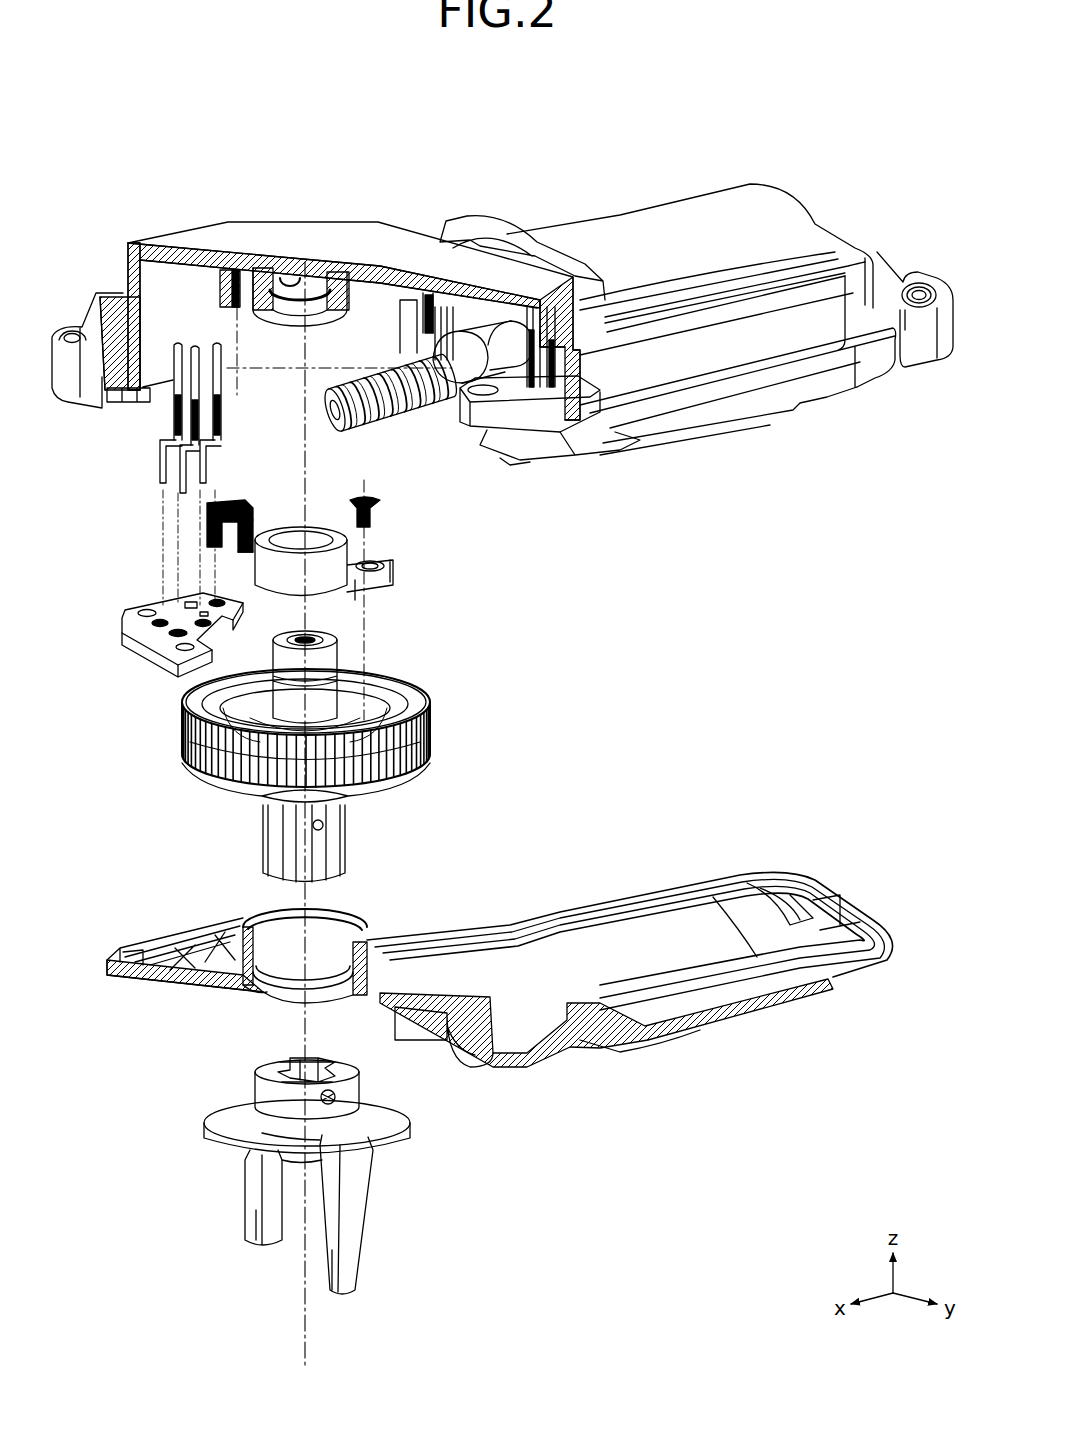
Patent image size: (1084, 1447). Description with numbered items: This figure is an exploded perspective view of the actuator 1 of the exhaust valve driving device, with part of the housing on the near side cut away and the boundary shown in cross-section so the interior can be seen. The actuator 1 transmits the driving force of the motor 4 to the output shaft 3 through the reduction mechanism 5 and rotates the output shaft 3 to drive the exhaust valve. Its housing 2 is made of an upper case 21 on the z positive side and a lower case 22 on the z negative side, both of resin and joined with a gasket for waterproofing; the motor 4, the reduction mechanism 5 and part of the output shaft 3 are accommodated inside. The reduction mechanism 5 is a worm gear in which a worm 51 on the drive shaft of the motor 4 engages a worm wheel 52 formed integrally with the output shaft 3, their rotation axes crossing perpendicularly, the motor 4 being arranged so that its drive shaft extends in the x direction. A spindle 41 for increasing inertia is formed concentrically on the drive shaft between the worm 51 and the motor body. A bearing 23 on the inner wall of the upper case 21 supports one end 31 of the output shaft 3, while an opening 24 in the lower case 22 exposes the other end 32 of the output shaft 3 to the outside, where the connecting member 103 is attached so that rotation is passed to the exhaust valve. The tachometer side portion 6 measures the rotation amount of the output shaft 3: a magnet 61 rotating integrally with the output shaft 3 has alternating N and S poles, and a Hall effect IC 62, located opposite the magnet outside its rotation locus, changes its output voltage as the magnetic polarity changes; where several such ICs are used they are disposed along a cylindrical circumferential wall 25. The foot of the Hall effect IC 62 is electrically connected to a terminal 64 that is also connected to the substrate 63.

The actuator 1 is at (97, 222).
The housing 2 is at (530, 598).
The output shaft 3 is at (358, 653).
The motor 4 is at (570, 461).
The reduction mechanism 5 is at (351, 577).
The tachometer side portion 6 is at (100, 450).
The upper case 21 is at (704, 217).
The lower case 22 is at (890, 957).
The bearing 23 is at (298, 287).
The opening 24 is at (327, 985).
The circumferential wall 25 is at (347, 322).
The one end 31 is at (323, 637).
The other end 32 is at (347, 854).
The spindle 41 is at (467, 353).
The worm 51 is at (405, 421).
The worm wheel 52 is at (430, 746).
The magnet 61 is at (327, 527).
The Hall effect IC 62 is at (247, 495).
The substrate 63 is at (150, 655).
The terminal 64 is at (227, 417).
The connecting member 103 is at (373, 1180).